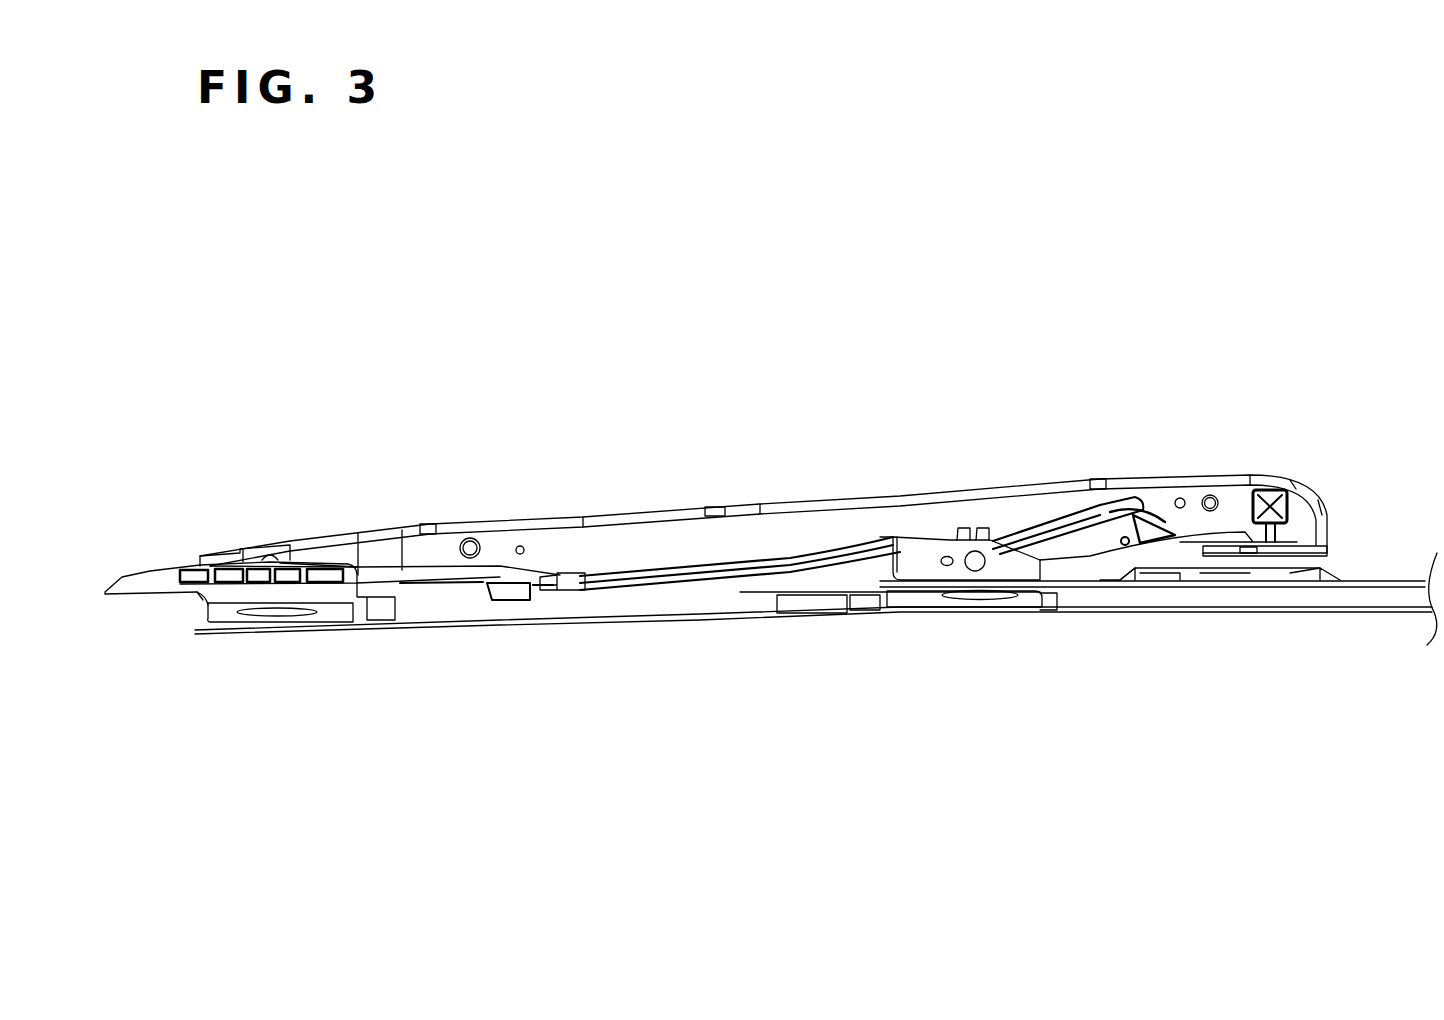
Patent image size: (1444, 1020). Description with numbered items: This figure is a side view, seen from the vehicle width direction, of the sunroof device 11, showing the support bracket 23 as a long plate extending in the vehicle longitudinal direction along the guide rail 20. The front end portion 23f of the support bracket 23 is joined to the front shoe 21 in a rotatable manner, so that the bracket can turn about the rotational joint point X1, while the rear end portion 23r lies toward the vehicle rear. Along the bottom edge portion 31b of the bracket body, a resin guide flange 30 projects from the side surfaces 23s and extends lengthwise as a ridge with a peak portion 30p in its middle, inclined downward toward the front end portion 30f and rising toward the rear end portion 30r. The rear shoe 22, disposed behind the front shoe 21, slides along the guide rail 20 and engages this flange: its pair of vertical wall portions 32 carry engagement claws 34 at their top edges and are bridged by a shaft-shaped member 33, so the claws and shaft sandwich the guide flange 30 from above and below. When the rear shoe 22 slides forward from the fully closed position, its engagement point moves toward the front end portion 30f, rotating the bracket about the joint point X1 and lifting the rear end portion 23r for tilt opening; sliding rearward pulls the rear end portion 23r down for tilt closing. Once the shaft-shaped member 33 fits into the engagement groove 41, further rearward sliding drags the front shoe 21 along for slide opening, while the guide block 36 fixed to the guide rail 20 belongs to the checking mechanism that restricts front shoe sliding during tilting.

The sunroof device 11 is at (178, 209).
The guide rail 20 is at (1385, 581).
The front shoe 21 is at (165, 565).
The rear shoe 22 is at (1057, 595).
The support bracket 23 is at (645, 508).
The front end portion 23f is at (228, 548).
The side surfaces 23s is at (735, 521).
The rear end portion 23r is at (1300, 496).
The guide flange 30 is at (755, 593).
The front end portion 30f is at (575, 578).
The peak portion 30p is at (880, 540).
The rear end portion 30r is at (1110, 500).
The bottom edge portion 31b is at (548, 592).
The vertical wall portions 32 is at (920, 548).
The shaft-shaped member 33 is at (965, 585).
The engagement claws 34 is at (975, 527).
The guide block 36 is at (1262, 588).
The engagement groove 41 is at (1165, 512).
The rotational joint point X1 is at (197, 603).